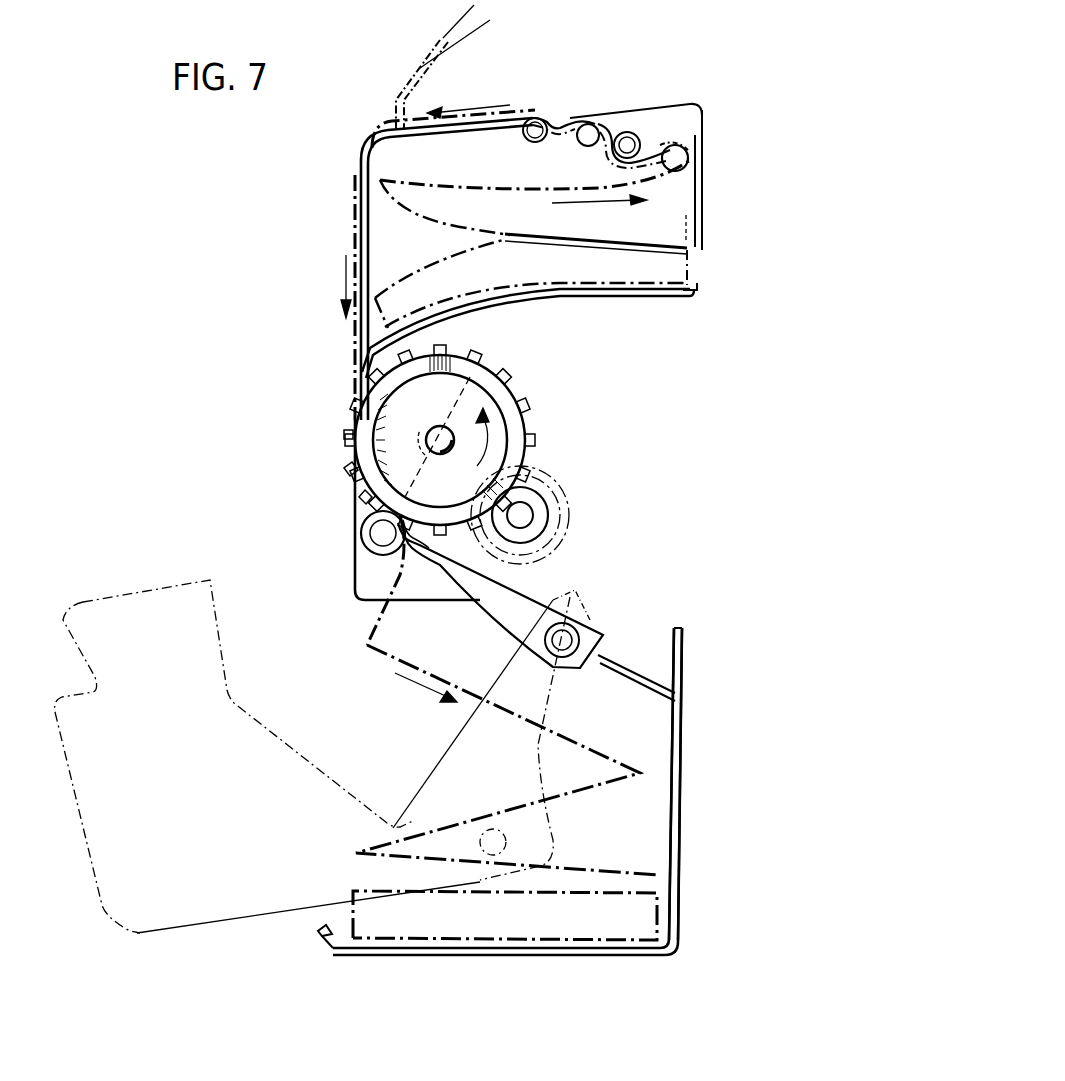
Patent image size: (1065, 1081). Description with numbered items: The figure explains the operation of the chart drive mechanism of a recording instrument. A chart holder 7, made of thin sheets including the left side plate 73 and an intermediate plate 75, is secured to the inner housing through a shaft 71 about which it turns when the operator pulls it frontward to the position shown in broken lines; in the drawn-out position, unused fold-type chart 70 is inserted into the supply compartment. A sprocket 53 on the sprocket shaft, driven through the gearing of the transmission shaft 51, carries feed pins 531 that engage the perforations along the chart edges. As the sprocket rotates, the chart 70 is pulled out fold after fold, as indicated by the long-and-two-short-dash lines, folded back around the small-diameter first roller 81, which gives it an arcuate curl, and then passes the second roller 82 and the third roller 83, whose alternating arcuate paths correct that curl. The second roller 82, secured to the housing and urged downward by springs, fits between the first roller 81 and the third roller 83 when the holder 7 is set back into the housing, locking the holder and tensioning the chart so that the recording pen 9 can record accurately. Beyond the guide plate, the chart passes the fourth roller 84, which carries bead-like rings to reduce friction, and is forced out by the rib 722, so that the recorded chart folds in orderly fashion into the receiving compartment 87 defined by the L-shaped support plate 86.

The holder 7 is at (156, 586).
The recording pen 9 is at (438, 42).
The transmission shaft 51 is at (522, 516).
The sprocket 53 is at (344, 433).
The feed pins 531 is at (528, 410).
The chart 70 is at (360, 208).
The shaft 71 is at (568, 640).
The rib 722 is at (436, 565).
The side plate 73 is at (608, 115).
The intermediate plate 75 is at (622, 300).
The first roller 81 is at (692, 148).
The second roller 82 is at (628, 138).
The third roller 83 is at (576, 140).
The fourth roller 84 is at (360, 530).
The L-shaped support plate 86 is at (682, 742).
The receiving compartment 87 is at (628, 833).